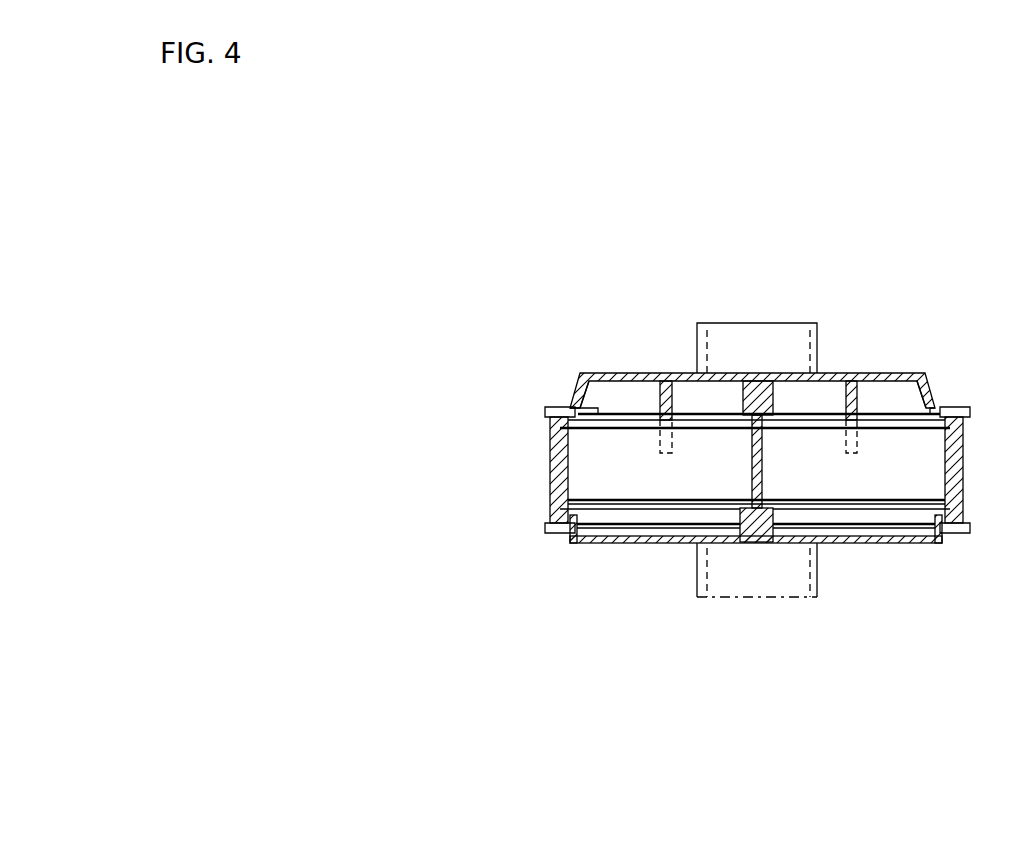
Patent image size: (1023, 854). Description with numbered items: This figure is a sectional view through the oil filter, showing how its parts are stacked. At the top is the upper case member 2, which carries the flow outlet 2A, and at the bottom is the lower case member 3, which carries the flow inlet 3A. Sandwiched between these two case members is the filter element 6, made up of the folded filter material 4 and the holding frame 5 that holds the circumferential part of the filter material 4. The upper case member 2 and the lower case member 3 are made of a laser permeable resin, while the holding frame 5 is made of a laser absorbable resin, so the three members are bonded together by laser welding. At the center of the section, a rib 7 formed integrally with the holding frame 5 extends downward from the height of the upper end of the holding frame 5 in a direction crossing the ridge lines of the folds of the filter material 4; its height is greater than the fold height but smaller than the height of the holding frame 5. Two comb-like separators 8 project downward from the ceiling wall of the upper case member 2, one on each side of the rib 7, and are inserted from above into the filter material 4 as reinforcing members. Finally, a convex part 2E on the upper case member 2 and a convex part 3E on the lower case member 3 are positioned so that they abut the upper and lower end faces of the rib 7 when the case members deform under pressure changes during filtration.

The upper case member 2 is at (607, 265).
The flow outlet 2A is at (785, 302).
The convex part 2E is at (773, 398).
The lower case member 3 is at (887, 668).
The flow inlet 3A is at (745, 632).
The convex part 3E is at (775, 515).
The filter material 4 is at (577, 388).
The holding frame 5 is at (550, 492).
The filter element 6 is at (502, 468).
The rib 7 is at (752, 453).
The separator 8 is at (640, 398).